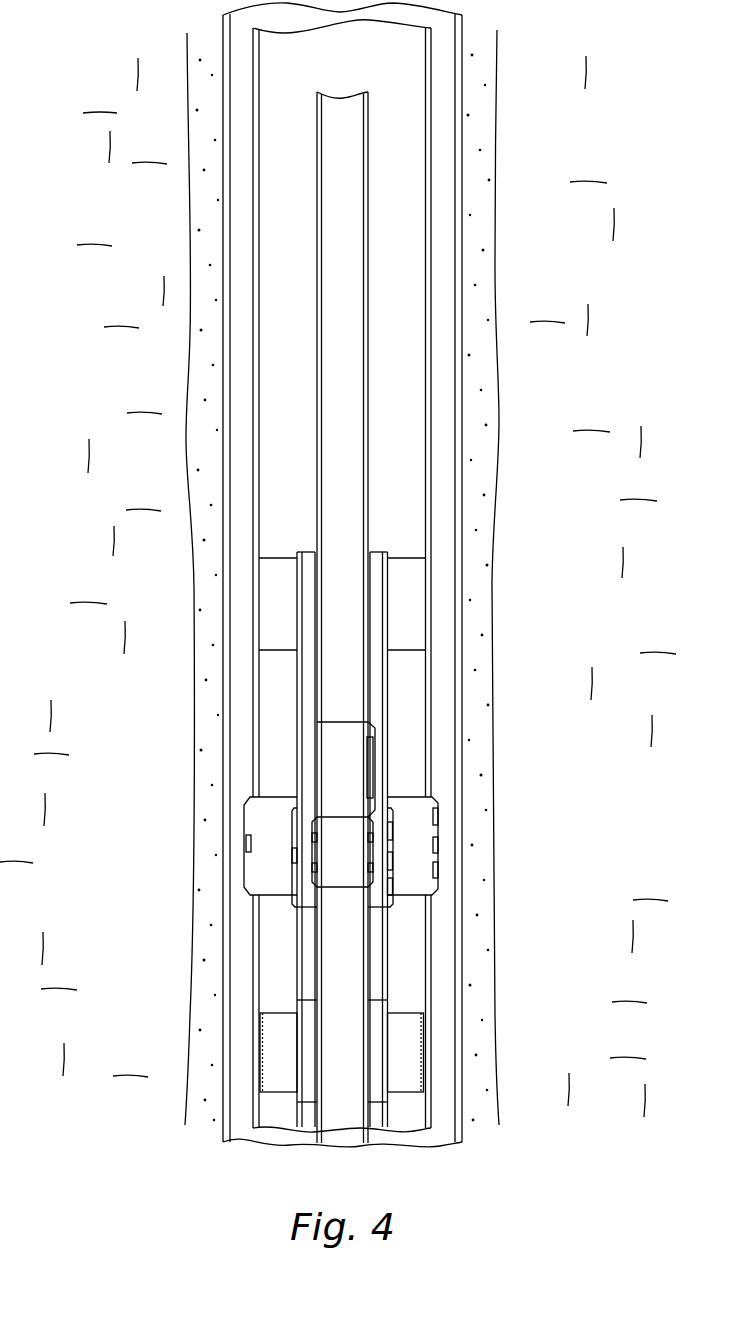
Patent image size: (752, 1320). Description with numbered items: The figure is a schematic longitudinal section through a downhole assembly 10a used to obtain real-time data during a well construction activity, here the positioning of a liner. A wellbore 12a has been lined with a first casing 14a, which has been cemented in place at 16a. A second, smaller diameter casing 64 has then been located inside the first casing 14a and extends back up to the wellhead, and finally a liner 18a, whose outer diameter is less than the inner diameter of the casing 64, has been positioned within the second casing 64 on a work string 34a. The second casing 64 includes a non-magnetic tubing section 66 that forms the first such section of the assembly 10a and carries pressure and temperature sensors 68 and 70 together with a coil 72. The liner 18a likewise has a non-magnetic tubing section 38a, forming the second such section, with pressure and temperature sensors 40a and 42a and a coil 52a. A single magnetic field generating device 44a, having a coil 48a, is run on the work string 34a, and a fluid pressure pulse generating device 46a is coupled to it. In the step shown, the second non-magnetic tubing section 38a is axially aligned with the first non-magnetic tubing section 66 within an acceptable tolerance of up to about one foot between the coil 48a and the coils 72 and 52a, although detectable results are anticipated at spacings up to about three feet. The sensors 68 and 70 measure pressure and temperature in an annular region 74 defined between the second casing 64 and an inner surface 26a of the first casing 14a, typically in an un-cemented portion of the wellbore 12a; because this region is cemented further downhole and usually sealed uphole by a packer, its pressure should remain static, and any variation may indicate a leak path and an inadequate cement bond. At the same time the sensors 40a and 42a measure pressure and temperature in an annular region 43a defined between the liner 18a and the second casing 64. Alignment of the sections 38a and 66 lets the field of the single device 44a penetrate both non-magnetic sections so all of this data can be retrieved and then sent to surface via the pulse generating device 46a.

The downhole assembly 10a is at (393, 670).
The wellbore 12a is at (500, 273).
The first casing 14a is at (455, 398).
The cement 16a is at (483, 497).
The liner 18a is at (282, 703).
The inner surface of first casing 26a is at (447, 1021).
The work string 34a is at (366, 133).
The non-magnetic tubing section of liner 38a is at (282, 820).
The pressure sensor 40a is at (393, 830).
The temperature sensor 42a is at (400, 886).
The annular region 43a is at (283, 969).
The magnetic field generating device 44a is at (307, 878).
The fluid pressure pulse generating device 46a is at (375, 723).
The coil of field generating device 48a is at (312, 866).
The coil of second non-magnetic tubing section 52a is at (440, 857).
The second casing 64 is at (428, 540).
The non-magnetic tubing section of second casing 66 is at (445, 802).
The pressure sensor 68 is at (440, 818).
The temperature sensor 70 is at (440, 868).
The coil of first non-magnetic tubing section 72 is at (440, 845).
The annular region 74 is at (443, 968).